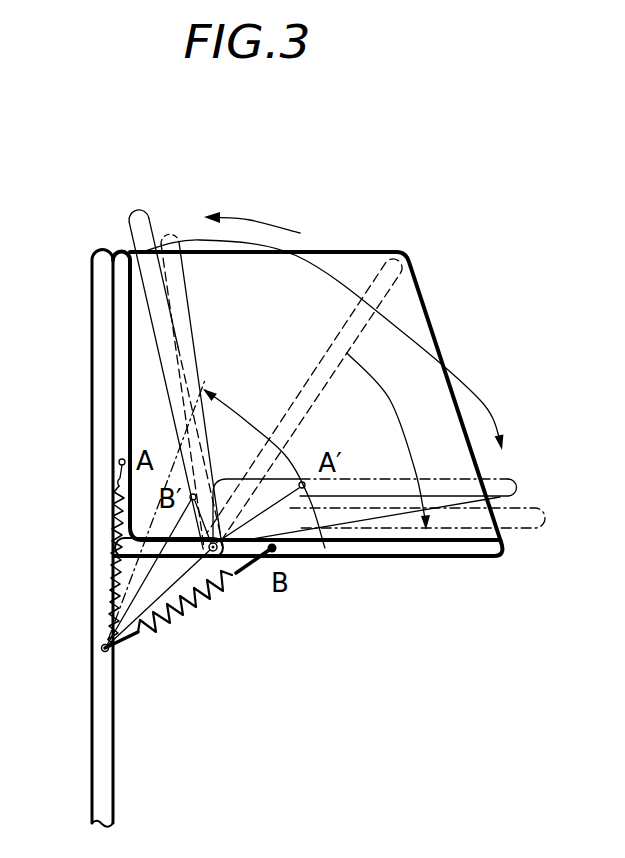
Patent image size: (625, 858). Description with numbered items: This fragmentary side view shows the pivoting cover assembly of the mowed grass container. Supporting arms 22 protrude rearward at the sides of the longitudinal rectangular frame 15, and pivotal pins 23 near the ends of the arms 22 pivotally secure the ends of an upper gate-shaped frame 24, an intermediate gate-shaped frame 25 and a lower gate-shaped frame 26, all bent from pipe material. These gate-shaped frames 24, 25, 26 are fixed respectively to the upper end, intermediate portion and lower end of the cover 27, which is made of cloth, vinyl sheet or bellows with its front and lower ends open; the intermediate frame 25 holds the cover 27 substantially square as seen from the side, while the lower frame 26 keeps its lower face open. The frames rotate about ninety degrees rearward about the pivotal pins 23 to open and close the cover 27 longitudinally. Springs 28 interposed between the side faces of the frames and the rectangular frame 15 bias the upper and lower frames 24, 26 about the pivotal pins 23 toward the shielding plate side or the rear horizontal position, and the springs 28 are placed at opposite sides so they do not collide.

The longitudinal frame 15 is at (112, 720).
The supporting arm 22 is at (104, 614).
The pivotal pin 23 is at (236, 576).
The upper gate-shaped frame 24 is at (118, 342).
The intermediate gate-shaped frame 25 is at (355, 318).
The lower gate-shaped frame 26 is at (385, 556).
The cover 27 is at (355, 252).
The spring 28 is at (192, 608).